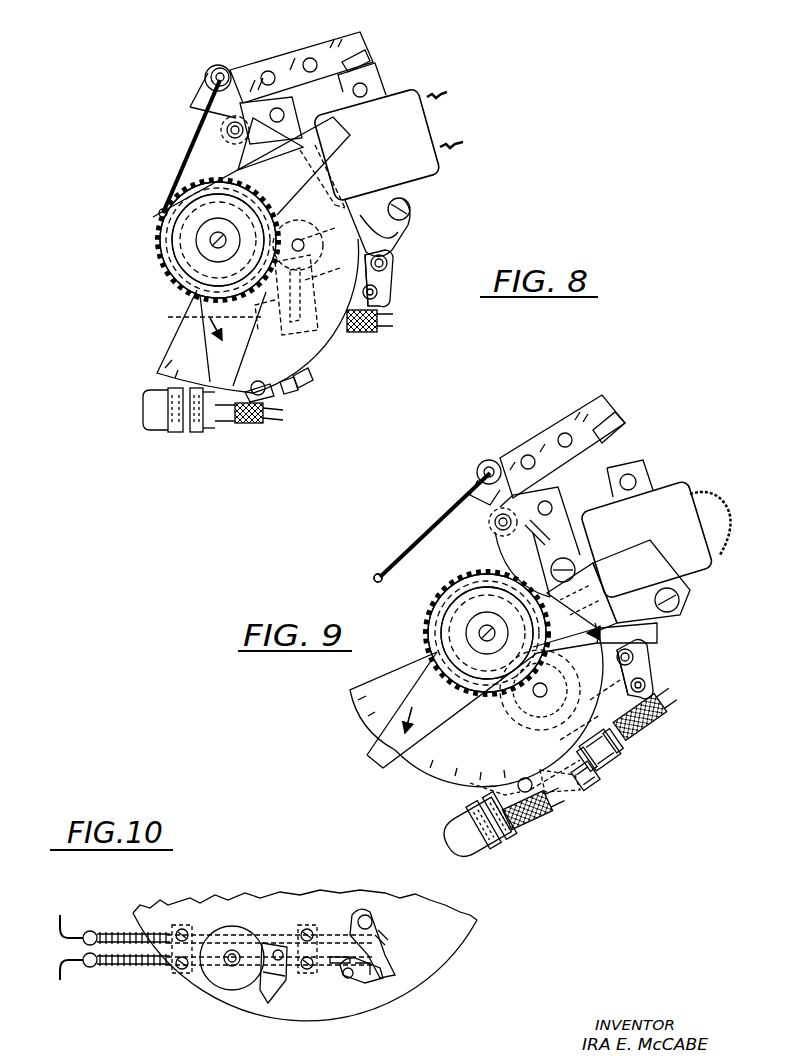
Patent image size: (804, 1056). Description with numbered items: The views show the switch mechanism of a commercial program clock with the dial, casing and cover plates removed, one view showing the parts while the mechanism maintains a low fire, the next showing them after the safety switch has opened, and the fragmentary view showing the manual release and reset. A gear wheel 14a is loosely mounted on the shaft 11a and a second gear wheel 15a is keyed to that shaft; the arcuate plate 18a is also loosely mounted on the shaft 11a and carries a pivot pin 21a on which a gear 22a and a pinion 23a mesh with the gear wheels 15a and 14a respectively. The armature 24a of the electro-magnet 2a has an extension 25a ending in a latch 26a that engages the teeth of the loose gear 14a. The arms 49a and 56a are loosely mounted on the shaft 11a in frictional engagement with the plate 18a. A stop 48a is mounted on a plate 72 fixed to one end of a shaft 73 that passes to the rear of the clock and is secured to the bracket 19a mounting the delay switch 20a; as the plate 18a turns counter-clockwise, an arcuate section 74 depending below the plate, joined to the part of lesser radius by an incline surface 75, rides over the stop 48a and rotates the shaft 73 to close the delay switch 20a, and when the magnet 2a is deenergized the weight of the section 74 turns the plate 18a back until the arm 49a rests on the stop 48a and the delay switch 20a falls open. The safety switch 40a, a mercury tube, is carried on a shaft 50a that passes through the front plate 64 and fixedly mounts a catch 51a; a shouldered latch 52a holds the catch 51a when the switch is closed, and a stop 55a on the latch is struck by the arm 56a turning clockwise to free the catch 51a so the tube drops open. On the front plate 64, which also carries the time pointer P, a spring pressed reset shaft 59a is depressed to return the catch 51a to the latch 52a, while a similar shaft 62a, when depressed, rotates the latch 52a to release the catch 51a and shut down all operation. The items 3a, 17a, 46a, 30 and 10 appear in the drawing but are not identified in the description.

In FIG. 8, the electro-magnet 2a is at (373, 87).
In FIG. 9, the electro-magnet 2a is at (635, 472).
In FIG. 8, the switch housing 3a is at (413, 128).
In FIG. 9, the switch housing 3a is at (660, 505).
In FIG. 8, the scale marking 10 is at (254, 358).
In FIG. 9, the scale marking 10 is at (424, 739).
In FIG. 8, the shaft 11a is at (212, 232).
In FIG. 9, the shaft 11a is at (480, 634).
In FIG. 8, the gear wheel 14a is at (165, 262).
In FIG. 9, the gear wheel 14a is at (430, 608).
In FIG. 8, the gear wheel 15a is at (172, 282).
In FIG. 9, the gear wheel 15a is at (467, 587).
In FIG. 8, the shaft 17a is at (215, 240).
In FIG. 8, the arcuate plate 18a is at (168, 360).
In FIG. 9, the arcuate plate 18a is at (360, 695).
In FIG. 8, the bracket 19a is at (370, 337).
In FIG. 9, the bracket 19a is at (663, 705).
In FIG. 8, the delay switch 20a is at (199, 317).
In FIG. 9, the delay switch 20a is at (613, 743).
In FIG. 8, the pivot pin 21a is at (304, 243).
In FIG. 9, the pivot pin 21a is at (540, 697).
In FIG. 8, the gear 22a is at (340, 200).
In FIG. 9, the gear 22a is at (512, 708).
In FIG. 8, the pinion 23a is at (388, 211).
In FIG. 9, the pinion 23a is at (520, 725).
In FIG. 8, the armature 24a is at (327, 53).
In FIG. 9, the armature 24a is at (593, 405).
In FIG. 8, the extension 25a is at (210, 127).
In FIG. 9, the extension 25a is at (460, 513).
In FIG. 8, the latch 26a is at (160, 218).
In FIG. 9, the latch 26a is at (373, 577).
In FIG. 8, the scale marking 30 is at (236, 243).
In FIG. 9, the scale marking 30 is at (488, 630).
In FIG. 8, the safety switch 40a is at (158, 402).
In FIG. 9, the safety switch 40a is at (463, 850).
In FIG. 9, the lead wire 46a is at (717, 495).
In FIG. 8, the stop 48a is at (390, 263).
In FIG. 9, the stop 48a is at (640, 652).
In FIG. 8, the arm 49a is at (322, 143).
In FIG. 9, the arm 49a is at (660, 633).
In FIG. 9, the shaft 50a is at (549, 793).
In FIG. 10, the shaft 50a is at (340, 983).
In FIG. 8, the catch 51a is at (280, 393).
In FIG. 10, the catch 51a is at (357, 983).
In FIG. 8, the latch 52a is at (313, 377).
In FIG. 10, the latch 52a is at (390, 943).
In FIG. 8, the stop 55a is at (300, 388).
In FIG. 10, the stop 55a is at (387, 977).
In FIG. 8, the arm 56a is at (217, 333).
In FIG. 9, the arm 56a is at (373, 737).
In FIG. 9, the reset shaft 59a is at (470, 783).
In FIG. 10, the reset shaft 59a is at (60, 967).
In FIG. 10, the shaft 62a is at (63, 913).
In FIG. 10, the front plate 64 is at (220, 913).
In FIG. 8, the plate 72 is at (383, 277).
In FIG. 9, the plate 72 is at (648, 663).
In FIG. 8, the shaft 73 is at (377, 300).
In FIG. 9, the shaft 73 is at (653, 690).
In FIG. 8, the arcuate section 74 is at (328, 347).
In FIG. 9, the arcuate section 74 is at (420, 760).
In FIG. 8, the incline surface 75 is at (393, 243).
In FIG. 9, the incline surface 75 is at (598, 775).
In FIG. 10, the time pointer P is at (270, 987).